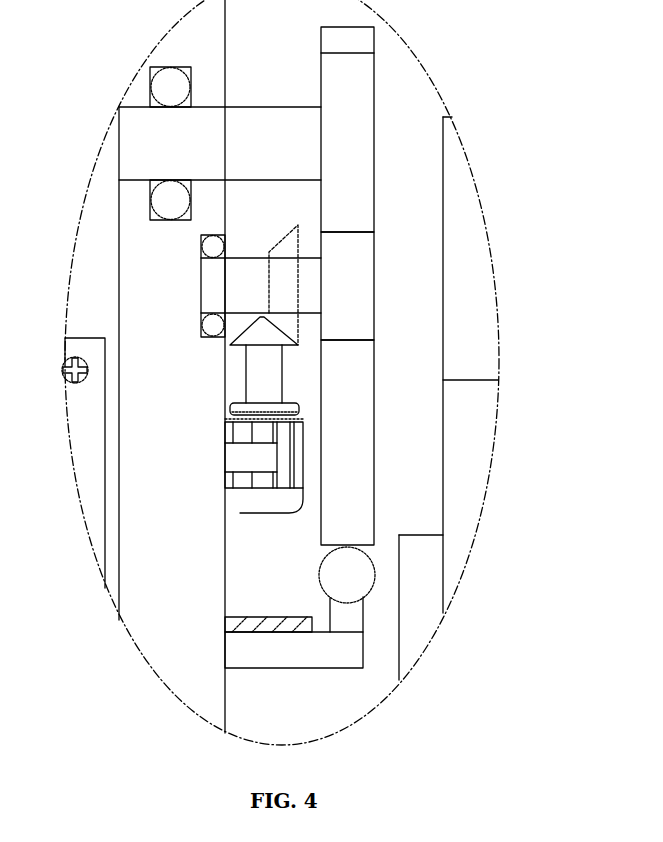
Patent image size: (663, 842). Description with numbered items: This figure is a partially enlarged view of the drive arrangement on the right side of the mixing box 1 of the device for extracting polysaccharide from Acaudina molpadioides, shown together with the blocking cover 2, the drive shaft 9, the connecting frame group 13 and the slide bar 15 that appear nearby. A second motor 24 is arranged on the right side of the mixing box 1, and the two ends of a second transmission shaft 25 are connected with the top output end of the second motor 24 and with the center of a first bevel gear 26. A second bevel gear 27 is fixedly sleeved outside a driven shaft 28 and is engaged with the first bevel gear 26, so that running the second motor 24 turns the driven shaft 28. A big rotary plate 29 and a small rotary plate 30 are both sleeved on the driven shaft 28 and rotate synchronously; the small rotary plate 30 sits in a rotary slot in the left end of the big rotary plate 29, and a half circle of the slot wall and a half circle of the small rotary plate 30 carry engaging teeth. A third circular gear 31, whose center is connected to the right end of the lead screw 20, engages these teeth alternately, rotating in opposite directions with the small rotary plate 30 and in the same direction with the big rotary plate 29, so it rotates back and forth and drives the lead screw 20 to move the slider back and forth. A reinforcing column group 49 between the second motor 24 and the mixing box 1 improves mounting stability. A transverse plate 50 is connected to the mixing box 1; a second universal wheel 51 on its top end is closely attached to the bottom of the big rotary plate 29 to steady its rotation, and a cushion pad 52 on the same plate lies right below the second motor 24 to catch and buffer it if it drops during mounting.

The mixing box 1 is at (168, 650).
The blocking cover 2 is at (72, 410).
The drive shaft 9 is at (478, 240).
The connecting frame group 13 is at (465, 507).
The slide bar 15 is at (423, 623).
The lead screw 20 is at (107, 153).
The second motor 24 is at (237, 500).
The second transmission shaft 25 is at (257, 372).
The first bevel gear 26 is at (255, 337).
The second bevel gear 27 is at (292, 247).
The driven shaft 28 is at (240, 283).
The big rotary plate 29 is at (348, 402).
The small rotary plate 30 is at (357, 280).
The third circular gear 31 is at (360, 92).
The reinforcing column group 49 is at (233, 455).
The transverse plate 50 is at (245, 648).
The second universal wheel 51 is at (347, 572).
The cushion pad 52 is at (278, 622).